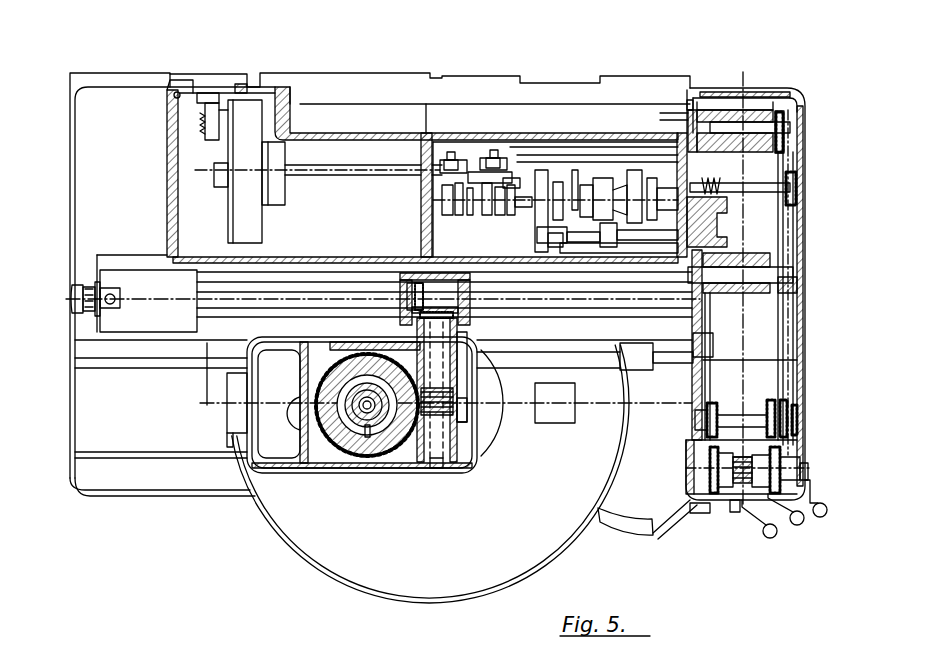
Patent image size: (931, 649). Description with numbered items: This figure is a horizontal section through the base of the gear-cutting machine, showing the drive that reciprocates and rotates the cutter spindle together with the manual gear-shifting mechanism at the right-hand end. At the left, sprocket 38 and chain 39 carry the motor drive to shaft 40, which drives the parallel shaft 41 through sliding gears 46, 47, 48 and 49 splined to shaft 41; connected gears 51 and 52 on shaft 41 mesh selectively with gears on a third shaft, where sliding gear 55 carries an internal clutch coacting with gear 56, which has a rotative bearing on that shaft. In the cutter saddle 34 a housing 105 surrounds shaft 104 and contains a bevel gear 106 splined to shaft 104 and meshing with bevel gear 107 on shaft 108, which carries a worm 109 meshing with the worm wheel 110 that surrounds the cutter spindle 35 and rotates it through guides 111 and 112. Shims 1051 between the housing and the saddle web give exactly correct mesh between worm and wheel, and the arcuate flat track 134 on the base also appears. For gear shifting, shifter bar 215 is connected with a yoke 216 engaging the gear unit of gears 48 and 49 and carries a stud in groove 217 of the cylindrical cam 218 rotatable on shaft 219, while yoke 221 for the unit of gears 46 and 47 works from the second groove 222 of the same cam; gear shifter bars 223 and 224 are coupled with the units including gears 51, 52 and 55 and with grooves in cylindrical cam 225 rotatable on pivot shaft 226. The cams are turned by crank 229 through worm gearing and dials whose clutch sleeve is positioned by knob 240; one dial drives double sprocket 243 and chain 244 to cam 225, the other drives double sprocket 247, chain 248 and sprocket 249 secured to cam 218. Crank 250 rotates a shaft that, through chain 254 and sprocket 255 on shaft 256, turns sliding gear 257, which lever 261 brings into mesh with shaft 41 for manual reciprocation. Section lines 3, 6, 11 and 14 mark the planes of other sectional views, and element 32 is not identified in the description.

The section line 3-3 / main shaft 3 is at (66, 299).
The section line 6- 6 is at (686, 468).
The section line 11- 11 is at (195, 172).
The section line 14- 14 is at (758, 68).
The lower shaft 32 is at (595, 363).
The cutter saddle 34 is at (367, 420).
The cutter spindle 35 is at (373, 417).
The sprocket 38 is at (228, 198).
The chain 39 is at (237, 220).
The shaft 40 is at (350, 176).
The shaft 41 is at (476, 216).
The sliding gear 46 is at (446, 216).
The sliding gear 47 is at (460, 217).
The sliding gear 48 is at (494, 217).
The sliding gear 49 is at (510, 217).
The gear 51 is at (575, 170).
The gear 52 is at (603, 178).
The sliding gear 55 is at (636, 170).
The gear 56 is at (640, 172).
The shaft 104 is at (587, 300).
The housing 105 is at (463, 372).
The bevel gear 106 is at (418, 280).
The bevel gear 107 is at (452, 352).
The shaft 108 is at (510, 403).
The worm 109 is at (463, 420).
The worm wheel 110 is at (398, 445).
The guide 111 is at (368, 437).
The guide 112 is at (343, 387).
The arcuate flat track 134 is at (613, 524).
The shifter bar 215 is at (544, 158).
The yoke 216 is at (497, 158).
The groove 217 is at (727, 100).
The cylindrical cam 218 is at (753, 112).
The shaft 219 is at (688, 100).
The yoke 221 is at (466, 160).
The second groove 222 is at (720, 112).
The gear shifter bar 223 is at (590, 236).
The gear shifter bar 224 is at (650, 243).
The cylindrical cam 225 is at (726, 293).
The pivot shaft 226 is at (697, 268).
The crank 229 is at (768, 538).
The knob 240 is at (700, 514).
The double sprocket 243 is at (695, 424).
The chain 244 is at (700, 325).
The double sprocket 247 is at (777, 400).
The chain 248 is at (797, 236).
The sprocket 249 is at (795, 147).
The crank 250 is at (819, 518).
The chain 254 is at (790, 316).
The sprocket 255 is at (800, 165).
The shaft 256 is at (762, 195).
The sliding gear 257 is at (716, 186).
The lever 261 is at (793, 525).
The shims 1051 is at (410, 348).